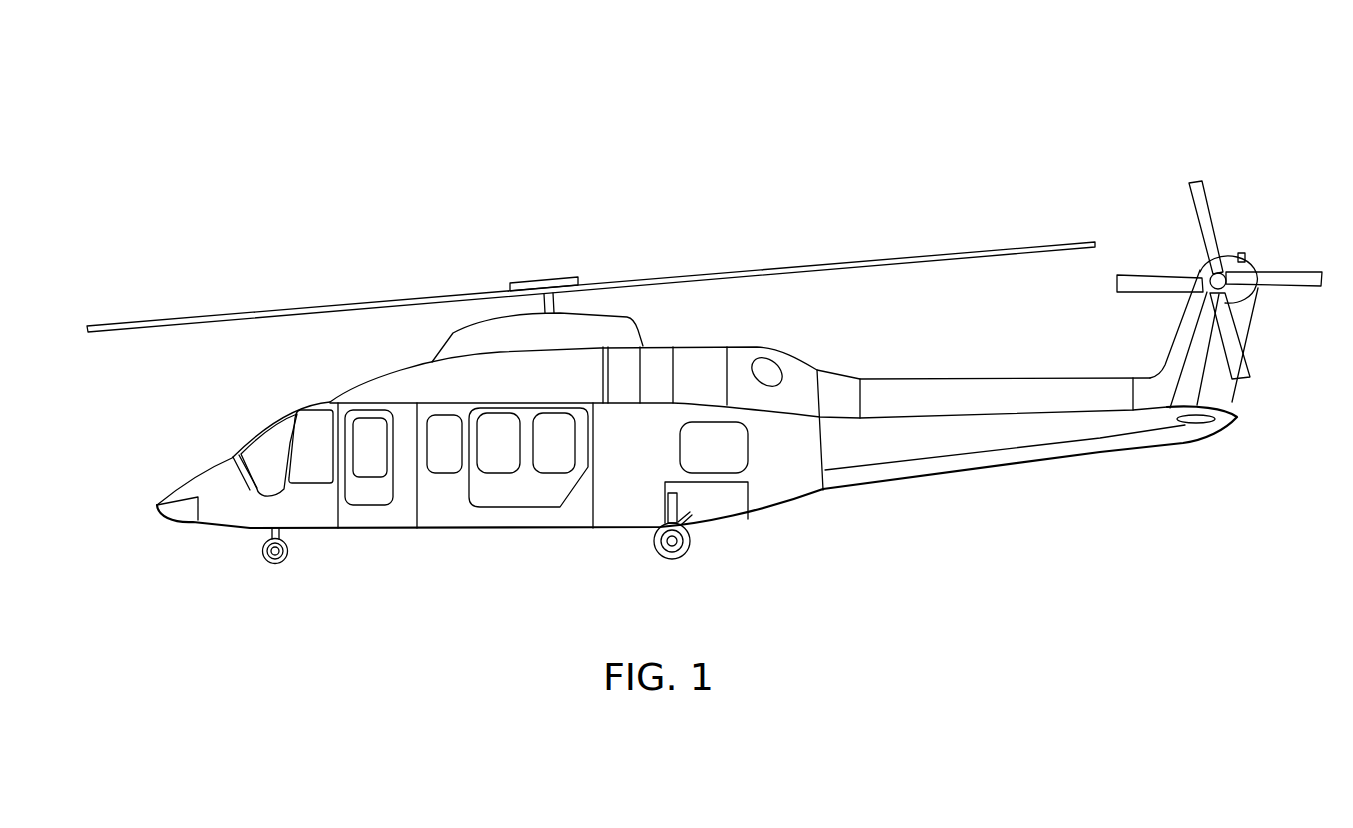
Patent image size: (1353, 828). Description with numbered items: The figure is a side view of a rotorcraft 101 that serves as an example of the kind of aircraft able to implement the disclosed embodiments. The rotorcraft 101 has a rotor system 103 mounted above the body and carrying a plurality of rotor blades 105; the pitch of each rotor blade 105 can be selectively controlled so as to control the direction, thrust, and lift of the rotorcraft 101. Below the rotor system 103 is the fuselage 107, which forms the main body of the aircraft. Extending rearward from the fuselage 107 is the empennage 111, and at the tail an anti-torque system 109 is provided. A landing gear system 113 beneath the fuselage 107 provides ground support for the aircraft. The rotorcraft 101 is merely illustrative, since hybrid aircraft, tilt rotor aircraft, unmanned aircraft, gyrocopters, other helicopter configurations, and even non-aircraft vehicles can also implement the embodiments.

The rotorcraft 101 is at (704, 341).
The rotor system 103 is at (591, 272).
The rotor blade 105 is at (332, 303).
The fuselage 107 is at (457, 532).
The anti-torque system 109 is at (1238, 235).
The empennage 111 is at (980, 470).
The landing gear system 113 is at (673, 560).